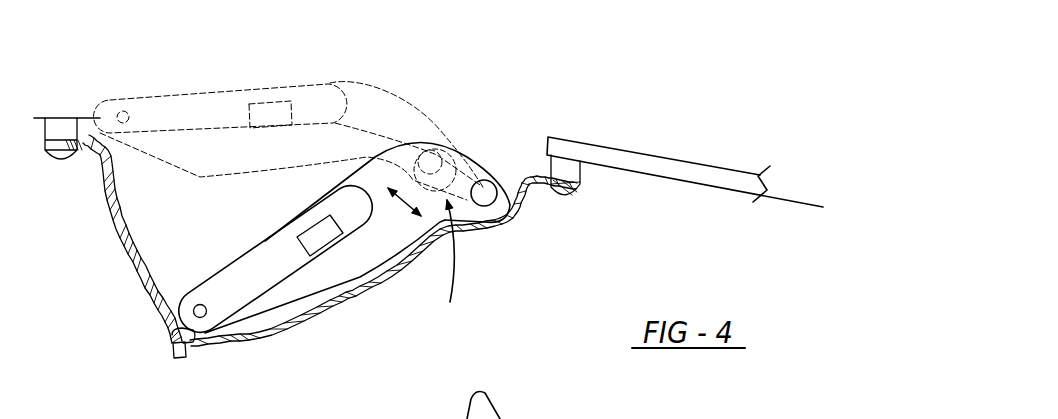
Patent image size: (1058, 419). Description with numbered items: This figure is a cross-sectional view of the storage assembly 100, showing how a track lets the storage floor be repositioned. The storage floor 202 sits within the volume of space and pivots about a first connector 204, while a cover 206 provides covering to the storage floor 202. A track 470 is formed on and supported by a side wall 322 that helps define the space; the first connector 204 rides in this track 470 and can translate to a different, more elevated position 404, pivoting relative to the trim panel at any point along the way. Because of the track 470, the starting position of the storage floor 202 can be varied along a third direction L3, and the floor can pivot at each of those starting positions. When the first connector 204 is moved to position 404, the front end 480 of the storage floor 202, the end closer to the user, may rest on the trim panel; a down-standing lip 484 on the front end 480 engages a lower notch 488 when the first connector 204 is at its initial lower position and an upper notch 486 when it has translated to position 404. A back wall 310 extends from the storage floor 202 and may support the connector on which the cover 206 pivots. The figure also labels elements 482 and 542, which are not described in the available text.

The storage assembly 100 is at (272, 80).
The position 404 is at (427, 157).
The back wall 310 is at (467, 153).
The first connector 204 is at (490, 207).
The hook end of strap 482 is at (495, 177).
The cover 206 is at (637, 156).
The upper notch 486 is at (78, 147).
The down-standing lip 484 is at (88, 143).
The lower notch 488 is at (177, 353).
The front end 480 is at (190, 337).
The side wall 322 is at (295, 297).
The storage floor 202 is at (365, 278).
The track 470 is at (463, 263).
The third direction L3 is at (401, 208).
The lever 542 is at (527, 418).